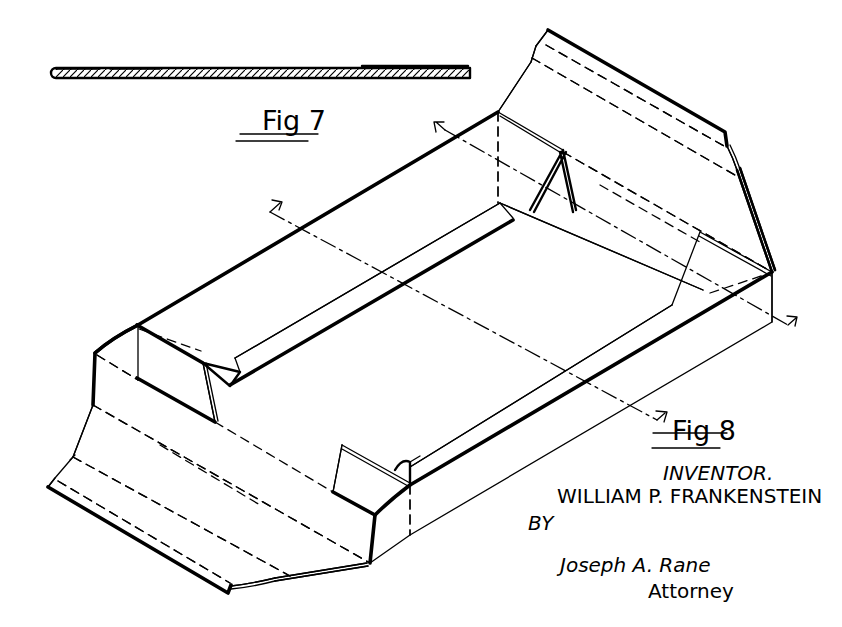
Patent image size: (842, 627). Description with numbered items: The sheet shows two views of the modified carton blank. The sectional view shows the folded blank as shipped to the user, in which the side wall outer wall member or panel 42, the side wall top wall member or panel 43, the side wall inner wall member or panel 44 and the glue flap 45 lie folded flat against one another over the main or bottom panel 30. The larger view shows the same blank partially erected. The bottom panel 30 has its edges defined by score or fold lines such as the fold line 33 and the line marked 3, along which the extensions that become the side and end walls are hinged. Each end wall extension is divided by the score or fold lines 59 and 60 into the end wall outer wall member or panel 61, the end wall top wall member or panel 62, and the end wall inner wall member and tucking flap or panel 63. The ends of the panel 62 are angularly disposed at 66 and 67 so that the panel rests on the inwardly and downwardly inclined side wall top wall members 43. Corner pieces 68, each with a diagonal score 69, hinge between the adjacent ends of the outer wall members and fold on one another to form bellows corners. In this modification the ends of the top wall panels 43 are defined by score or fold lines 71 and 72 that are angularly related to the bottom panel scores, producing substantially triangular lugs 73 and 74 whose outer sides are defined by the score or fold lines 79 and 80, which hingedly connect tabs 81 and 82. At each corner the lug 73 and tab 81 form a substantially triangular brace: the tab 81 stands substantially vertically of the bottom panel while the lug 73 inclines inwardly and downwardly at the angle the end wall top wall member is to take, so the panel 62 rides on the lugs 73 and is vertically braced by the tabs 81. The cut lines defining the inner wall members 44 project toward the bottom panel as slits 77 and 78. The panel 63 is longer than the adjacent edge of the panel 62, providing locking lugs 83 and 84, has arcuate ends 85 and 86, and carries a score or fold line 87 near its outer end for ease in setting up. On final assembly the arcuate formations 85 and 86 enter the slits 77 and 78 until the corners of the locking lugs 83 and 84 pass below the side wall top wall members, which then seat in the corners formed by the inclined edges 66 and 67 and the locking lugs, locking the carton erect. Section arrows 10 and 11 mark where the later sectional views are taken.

In FIG. 8, the section line 10- 10 is at (455, 325).
In FIG. 8, the section line 11- 11 is at (608, 237).
In FIG. 7, the main or bottom panel 30 is at (236, 78).
In FIG. 8, the main or bottom panel 30 is at (516, 296).
In FIG. 8, the score or fold line 33 is at (606, 228).
In FIG. 8, the panel 3 is at (278, 466).
In FIG. 7, the side wall outer wall member panel 42 is at (86, 78).
In FIG. 8, the side wall outer wall member panel 42 is at (672, 372).
In FIG. 7, the side wall top wall member panel 43 is at (78, 67).
In FIG. 8, the side wall top wall member panel 43 is at (340, 200).
In FIG. 7, the side wall inner wall member panel 44 is at (124, 67).
In FIG. 7, the glue flap 45 is at (162, 67).
In FIG. 8, the glue flap 45 is at (344, 316).
In FIG. 8, the score or fold line 59 is at (610, 174).
In FIG. 8, the score or fold line 60 is at (644, 128).
In FIG. 8, the end wall outer wall member panel 61 is at (634, 242).
In FIG. 8, the end wall top wall member panel 62 is at (628, 190).
In FIG. 8, the end wall inner wall member and tucking flap panel 63 is at (686, 104).
In FIG. 8, the biased end of end wall top wall member 66 is at (522, 74).
In FIG. 8, the biased end of end wall top wall member 67 is at (766, 248).
In FIG. 8, the corner piece 68 is at (116, 338).
In FIG. 8, the diagonal score 69 is at (108, 374).
In FIG. 8, the score or fold line 71 is at (228, 356).
In FIG. 8, the score or fold line 72 is at (504, 150).
In FIG. 8, the substantially triangularly shaped lug 73 is at (240, 380).
In FIG. 8, the substantially triangularly shaped lug 74 is at (530, 216).
In FIG. 8, the cut line projection or slit 77 is at (240, 360).
In FIG. 8, the cut line projection or slit 78 is at (498, 204).
In FIG. 8, the score or fold line 79 is at (184, 348).
In FIG. 8, the score or fold line 80 is at (546, 140).
In FIG. 8, the tab 81 is at (212, 398).
In FIG. 8, the tab 82 is at (554, 208).
In FIG. 8, the locking lug 83 is at (532, 58).
In FIG. 8, the locking lug 84 is at (745, 188).
In FIG. 8, the arcuate end formation 85 is at (541, 42).
In FIG. 8, the arcuate end formation 86 is at (740, 160).
In FIG. 8, the score or fold line 87 is at (626, 90).